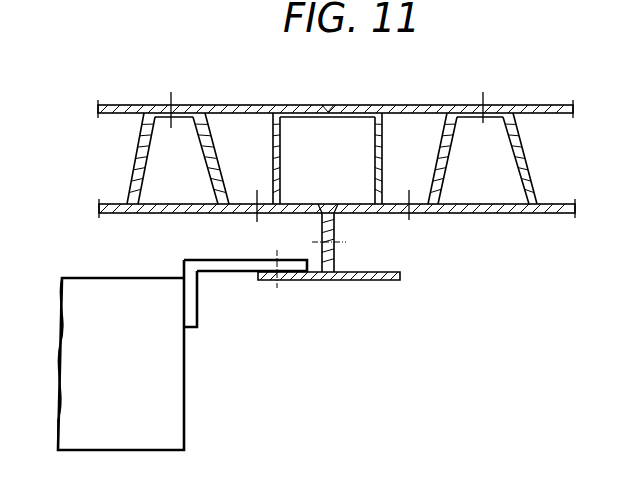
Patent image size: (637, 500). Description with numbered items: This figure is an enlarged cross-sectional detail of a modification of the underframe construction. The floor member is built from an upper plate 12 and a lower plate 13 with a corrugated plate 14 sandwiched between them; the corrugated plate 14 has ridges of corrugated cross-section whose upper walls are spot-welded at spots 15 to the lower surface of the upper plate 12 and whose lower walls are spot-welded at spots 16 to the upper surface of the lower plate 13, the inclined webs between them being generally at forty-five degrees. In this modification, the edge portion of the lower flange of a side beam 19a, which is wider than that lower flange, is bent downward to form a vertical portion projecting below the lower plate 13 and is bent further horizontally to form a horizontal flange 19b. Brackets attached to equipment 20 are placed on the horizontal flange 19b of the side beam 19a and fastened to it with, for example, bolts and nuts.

The upper plate 12 is at (437, 104).
The lower plate 13 is at (156, 214).
The corrugated plate 14 is at (136, 155).
The spot weld 15 is at (168, 96).
The spot weld 16 is at (256, 221).
The side beam 19a is at (273, 145).
The horizontal flange 19b is at (356, 282).
The equipment 20 is at (172, 428).